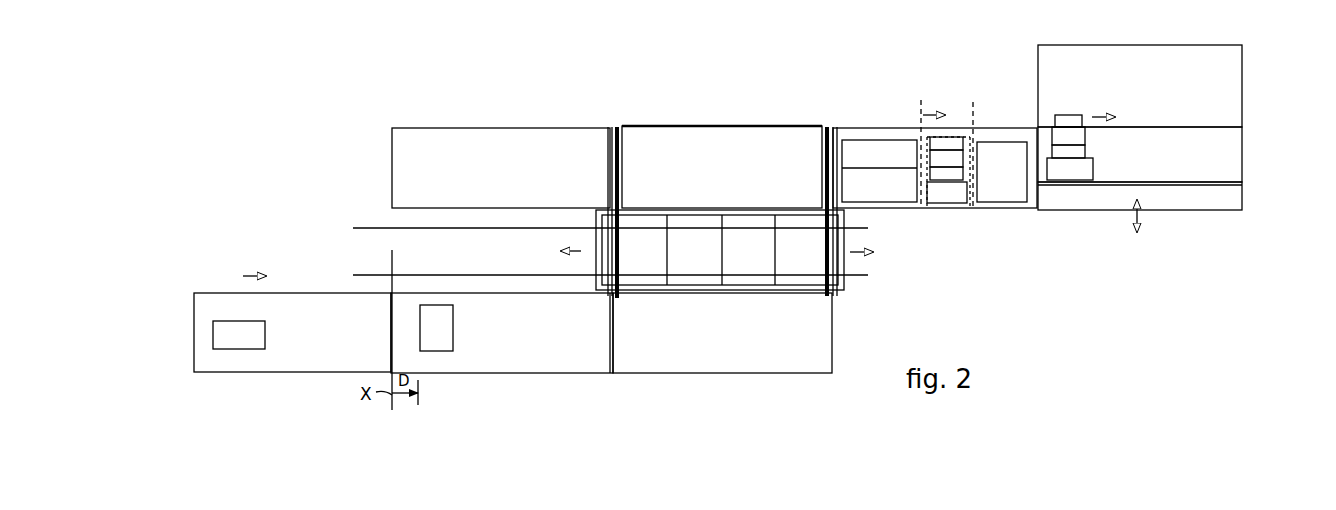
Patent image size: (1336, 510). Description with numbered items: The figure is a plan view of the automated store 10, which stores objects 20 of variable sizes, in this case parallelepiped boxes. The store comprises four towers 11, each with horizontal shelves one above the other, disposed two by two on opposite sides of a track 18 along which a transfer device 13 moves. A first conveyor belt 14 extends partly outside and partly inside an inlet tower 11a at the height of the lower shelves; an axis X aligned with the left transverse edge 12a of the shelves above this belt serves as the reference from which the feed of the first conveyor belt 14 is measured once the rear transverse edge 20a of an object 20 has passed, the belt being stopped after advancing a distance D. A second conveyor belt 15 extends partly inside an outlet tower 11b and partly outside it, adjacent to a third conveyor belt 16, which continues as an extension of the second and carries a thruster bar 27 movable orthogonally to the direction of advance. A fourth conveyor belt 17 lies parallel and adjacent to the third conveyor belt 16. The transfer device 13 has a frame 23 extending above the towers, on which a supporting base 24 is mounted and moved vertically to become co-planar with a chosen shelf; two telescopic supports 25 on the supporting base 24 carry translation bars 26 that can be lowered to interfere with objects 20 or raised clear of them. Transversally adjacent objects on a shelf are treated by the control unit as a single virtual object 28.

The automated store 10 is at (963, 300).
The tower 11 is at (512, 116).
The inlet tower 11a is at (516, 380).
The outlet tower 11b is at (716, 114).
The left transverse edge 12a is at (392, 165).
The transfer device 13 is at (851, 296).
The first conveyor belt 14 is at (286, 376).
The second conveyor belt 15 is at (920, 212).
The third conveyor belt 16 is at (1228, 200).
The fourth conveyor belt 17 is at (1222, 105).
The track 18 is at (353, 228).
The object 20 is at (240, 340).
The rear transverse edge 20a is at (420, 345).
The frame 23 is at (597, 272).
The supporting base 24 is at (803, 270).
The telescopic support 25 is at (613, 140).
The translation bar 26 is at (788, 126).
The thruster bar 27 is at (1238, 178).
The virtual object 28 is at (975, 130).